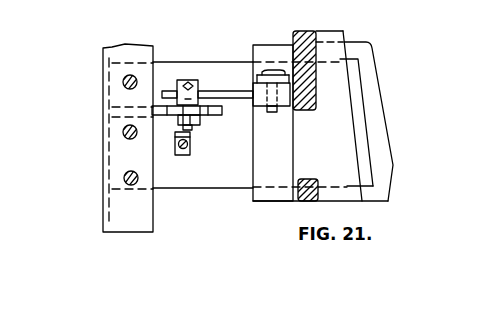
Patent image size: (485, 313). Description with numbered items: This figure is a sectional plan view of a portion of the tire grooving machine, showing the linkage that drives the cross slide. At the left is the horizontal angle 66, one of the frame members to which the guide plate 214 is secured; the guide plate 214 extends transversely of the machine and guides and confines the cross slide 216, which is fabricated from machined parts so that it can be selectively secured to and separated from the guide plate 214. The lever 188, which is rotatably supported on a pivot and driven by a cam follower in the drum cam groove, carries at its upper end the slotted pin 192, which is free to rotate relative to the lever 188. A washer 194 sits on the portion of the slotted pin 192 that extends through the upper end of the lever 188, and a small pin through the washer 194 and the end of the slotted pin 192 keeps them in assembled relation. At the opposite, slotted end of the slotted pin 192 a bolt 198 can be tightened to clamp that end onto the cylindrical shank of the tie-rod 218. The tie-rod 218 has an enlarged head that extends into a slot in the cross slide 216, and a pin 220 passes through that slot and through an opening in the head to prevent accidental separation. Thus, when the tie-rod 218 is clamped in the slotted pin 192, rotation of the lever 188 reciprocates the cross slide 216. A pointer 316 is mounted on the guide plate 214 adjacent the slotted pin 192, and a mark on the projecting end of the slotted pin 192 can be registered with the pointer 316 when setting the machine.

The horizontal angle 66 is at (125, 232).
The lever 188 is at (205, 116).
The slotted pin 192 is at (200, 85).
The washer 194 is at (176, 120).
The bolt 198 is at (190, 81).
The guide plate 214 is at (193, 190).
The cross slide 216 is at (270, 206).
The tie-rod 218 is at (237, 99).
The pin 220 is at (272, 70).
The pointer 316 is at (184, 157).